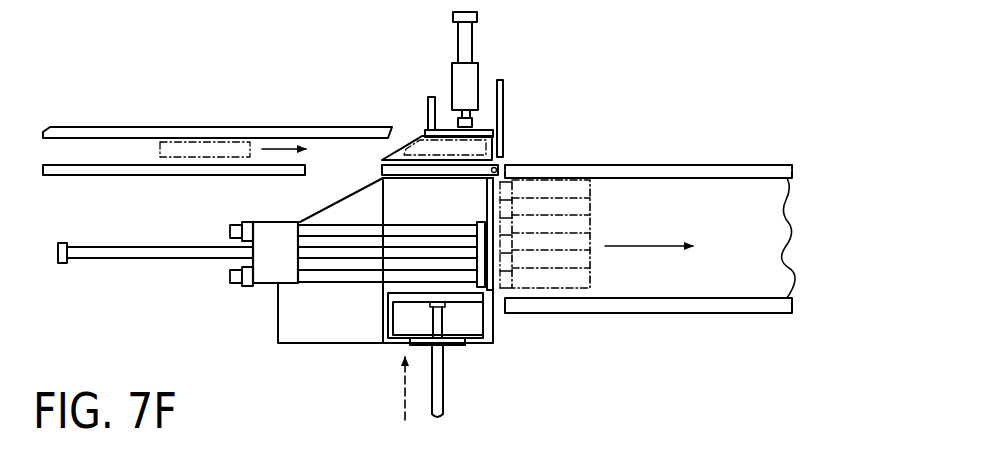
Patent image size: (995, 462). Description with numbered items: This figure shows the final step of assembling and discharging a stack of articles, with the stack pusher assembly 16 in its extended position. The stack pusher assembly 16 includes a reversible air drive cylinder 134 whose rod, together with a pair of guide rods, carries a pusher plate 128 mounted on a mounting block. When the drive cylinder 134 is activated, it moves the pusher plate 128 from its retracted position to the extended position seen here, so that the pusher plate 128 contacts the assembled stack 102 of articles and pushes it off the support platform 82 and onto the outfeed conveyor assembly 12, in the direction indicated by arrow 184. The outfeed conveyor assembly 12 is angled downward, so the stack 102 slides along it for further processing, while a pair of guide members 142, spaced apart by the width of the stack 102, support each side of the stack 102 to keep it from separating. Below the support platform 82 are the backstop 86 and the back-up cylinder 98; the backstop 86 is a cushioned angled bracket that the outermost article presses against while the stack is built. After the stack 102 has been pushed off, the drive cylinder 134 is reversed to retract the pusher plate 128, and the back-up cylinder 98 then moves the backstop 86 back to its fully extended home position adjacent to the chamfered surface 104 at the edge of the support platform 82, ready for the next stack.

The outfeed conveyor assembly 12 is at (669, 241).
The stack pusher assembly 16 is at (249, 217).
The support platform 82 is at (387, 286).
The backstop 86 is at (402, 323).
The back-up cylinder 98 is at (443, 387).
The stack 102 is at (553, 172).
The chamfered surface 104 is at (392, 180).
The pusher plate 128 is at (485, 199).
The drive cylinder 134 is at (140, 249).
The guide members 142 is at (643, 167).
The arrow 184 is at (640, 245).